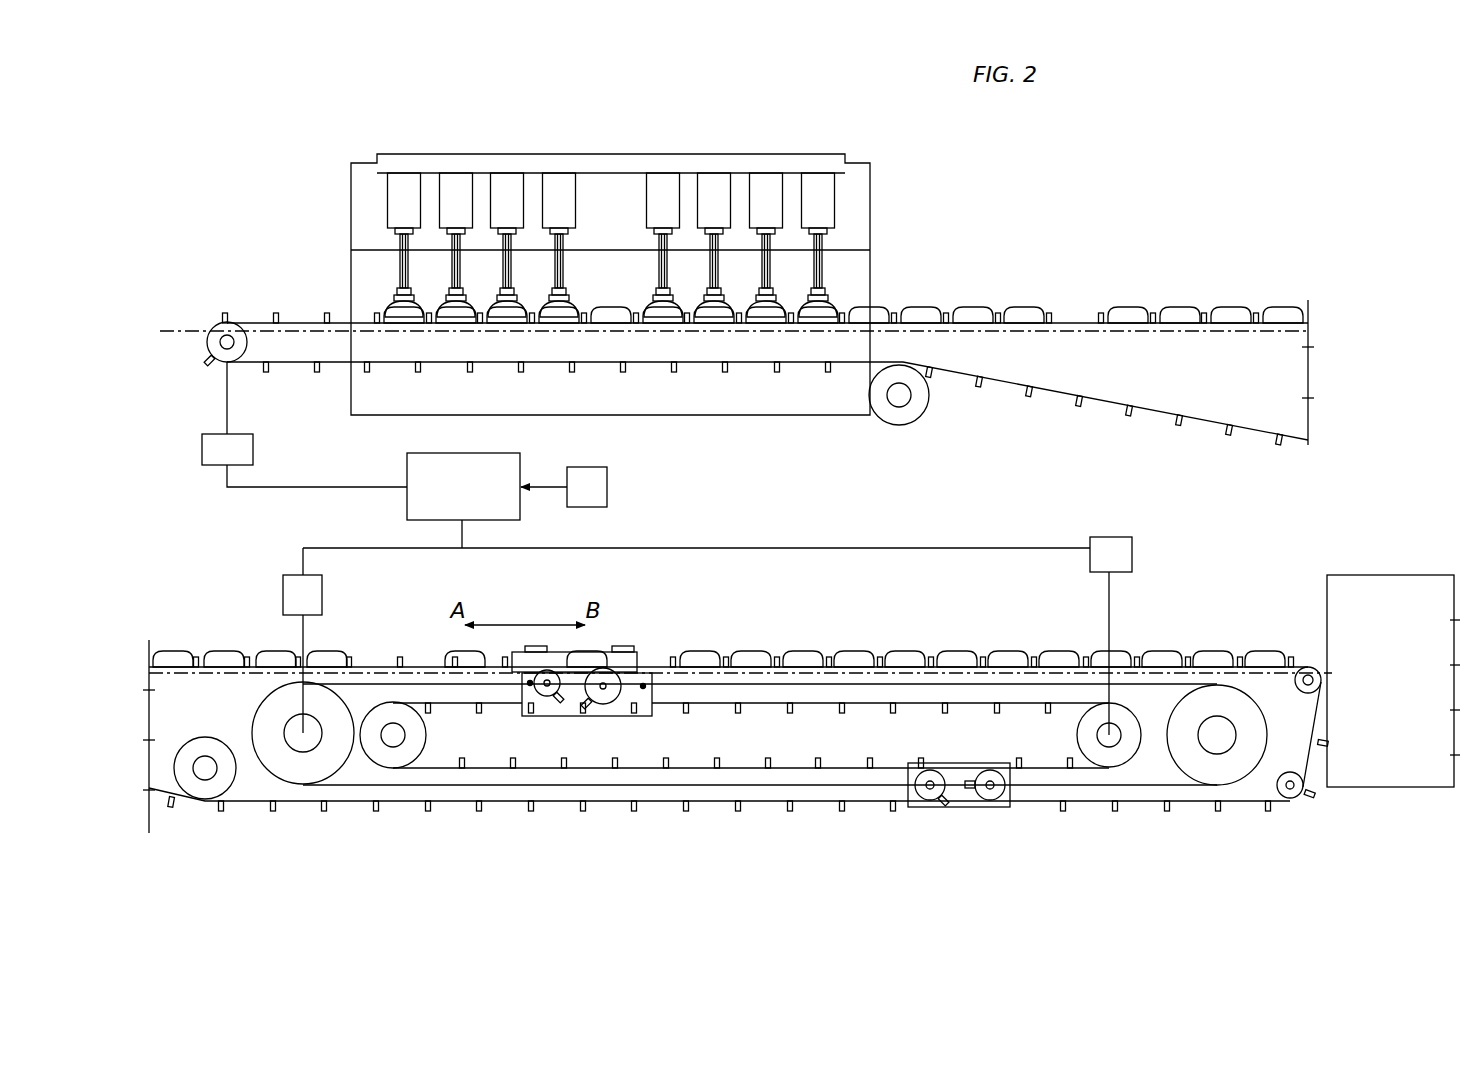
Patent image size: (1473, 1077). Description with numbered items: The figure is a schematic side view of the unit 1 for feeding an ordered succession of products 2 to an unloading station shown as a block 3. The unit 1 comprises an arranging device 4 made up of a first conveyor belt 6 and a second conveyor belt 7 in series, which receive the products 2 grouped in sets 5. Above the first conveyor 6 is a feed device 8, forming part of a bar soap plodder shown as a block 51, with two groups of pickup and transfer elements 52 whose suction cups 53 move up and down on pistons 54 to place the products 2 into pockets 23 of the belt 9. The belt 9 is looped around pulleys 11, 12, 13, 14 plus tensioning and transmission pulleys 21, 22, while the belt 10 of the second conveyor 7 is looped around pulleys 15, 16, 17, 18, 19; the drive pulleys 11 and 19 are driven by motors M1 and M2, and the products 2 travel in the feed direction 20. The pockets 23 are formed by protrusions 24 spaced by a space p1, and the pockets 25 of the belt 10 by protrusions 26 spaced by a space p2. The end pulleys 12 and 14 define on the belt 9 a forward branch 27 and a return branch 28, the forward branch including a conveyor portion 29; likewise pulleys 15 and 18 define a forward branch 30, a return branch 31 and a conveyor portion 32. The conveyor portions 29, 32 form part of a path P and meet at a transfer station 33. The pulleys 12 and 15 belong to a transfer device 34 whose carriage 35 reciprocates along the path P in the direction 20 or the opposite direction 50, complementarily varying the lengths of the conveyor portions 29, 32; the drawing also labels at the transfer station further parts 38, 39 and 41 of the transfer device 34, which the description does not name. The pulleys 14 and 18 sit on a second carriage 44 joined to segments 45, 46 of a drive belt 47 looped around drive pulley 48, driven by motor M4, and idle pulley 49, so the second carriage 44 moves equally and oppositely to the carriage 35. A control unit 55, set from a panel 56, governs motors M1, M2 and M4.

The unit for feeding an ordered succession of products 1 is at (1280, 530).
The products 2 is at (955, 310).
The unloading station 3 is at (1397, 573).
The arranging device 4 is at (640, 663).
The sets 5 is at (378, 300).
The first conveyor belt 6 is at (250, 315).
The second conveyor belt 7 is at (675, 715).
The feed device 8 is at (590, 145).
The belt 9 is at (300, 315).
The belt 10 is at (711, 708).
The pulley 11 is at (225, 335).
The pulley 12 is at (527, 690).
The pulley 13 is at (385, 752).
The pulley 14 is at (926, 800).
The pulley 15 is at (602, 706).
The pulley 16 is at (1303, 666).
The pulley 17 is at (1302, 800).
The pulley 18 is at (993, 800).
The pulley 19 is at (1090, 730).
The feed direction 20 is at (990, 272).
The tensioning and transmission pulley 21 is at (898, 402).
The tensioning and transmission pulley 22 is at (182, 777).
The pockets 23 is at (337, 372).
The protrusions 24 is at (625, 372).
The pockets 25 is at (862, 710).
The protrusions 26 is at (770, 714).
The forward branch 27 is at (1124, 303).
The return branch 28 is at (1045, 402).
The conveyor portion 29 is at (1254, 303).
The forward branch 30 is at (792, 612).
The return branch 31 is at (797, 712).
The conveyor portion 32 is at (1145, 640).
The transfer station 33 is at (549, 650).
The transfer device 34 is at (618, 650).
The carriage 35 is at (546, 698).
The carriage 38 is at (522, 672).
The carriage product support 39 is at (645, 657).
The guide rail 41 is at (560, 648).
The second carriage 44 is at (962, 810).
The segment 45 is at (500, 790).
The segment 46 is at (1147, 788).
The drive belt 47 is at (975, 688).
The drive pulley 48 is at (282, 762).
The idle pulley 49 is at (1232, 772).
The opposite direction 50 is at (880, 622).
The bar soap plodder 51 is at (356, 160).
The pickup and transfer elements 52 is at (463, 257).
The suction cups 53 is at (573, 300).
The pistons 54 is at (449, 190).
The control unit 55 is at (696, 514).
The panel 56 is at (564, 487).
The motor M1 is at (304, 424).
The motor M2 is at (1111, 636).
The motor M4 is at (302, 654).
The path P is at (160, 333).
The space p1 is at (355, 660).
The space p2 is at (1113, 812).